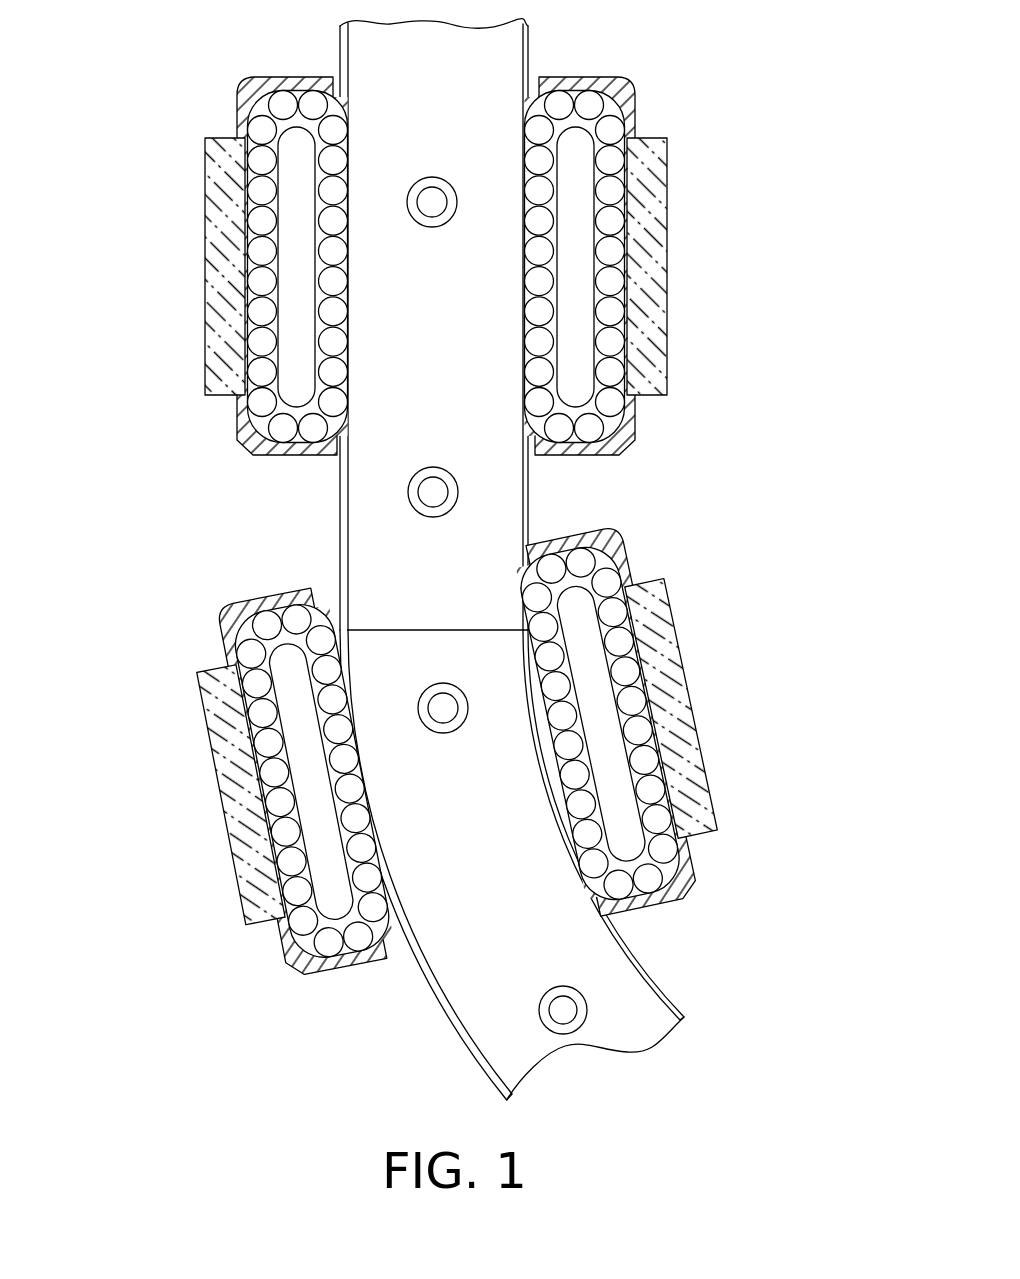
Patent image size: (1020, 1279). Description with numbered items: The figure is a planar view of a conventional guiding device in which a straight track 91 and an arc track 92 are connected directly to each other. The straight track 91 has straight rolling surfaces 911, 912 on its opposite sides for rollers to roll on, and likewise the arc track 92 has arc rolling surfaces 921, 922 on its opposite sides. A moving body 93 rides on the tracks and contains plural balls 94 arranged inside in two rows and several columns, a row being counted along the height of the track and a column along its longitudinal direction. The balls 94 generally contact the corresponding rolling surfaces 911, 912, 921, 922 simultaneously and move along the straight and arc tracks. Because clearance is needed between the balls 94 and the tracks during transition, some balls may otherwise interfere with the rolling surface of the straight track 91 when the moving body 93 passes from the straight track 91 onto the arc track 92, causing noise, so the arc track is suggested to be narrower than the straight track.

The straight track 91 is at (480, 324).
The straight rolling surface 911 is at (343, 520).
The straight rolling surface 912 is at (535, 480).
The arc track 92 is at (526, 865).
The arc rolling surface 921 is at (427, 967).
The arc rolling surface 922 is at (628, 934).
The moving body 93 is at (257, 847).
The balls 94 is at (315, 712).